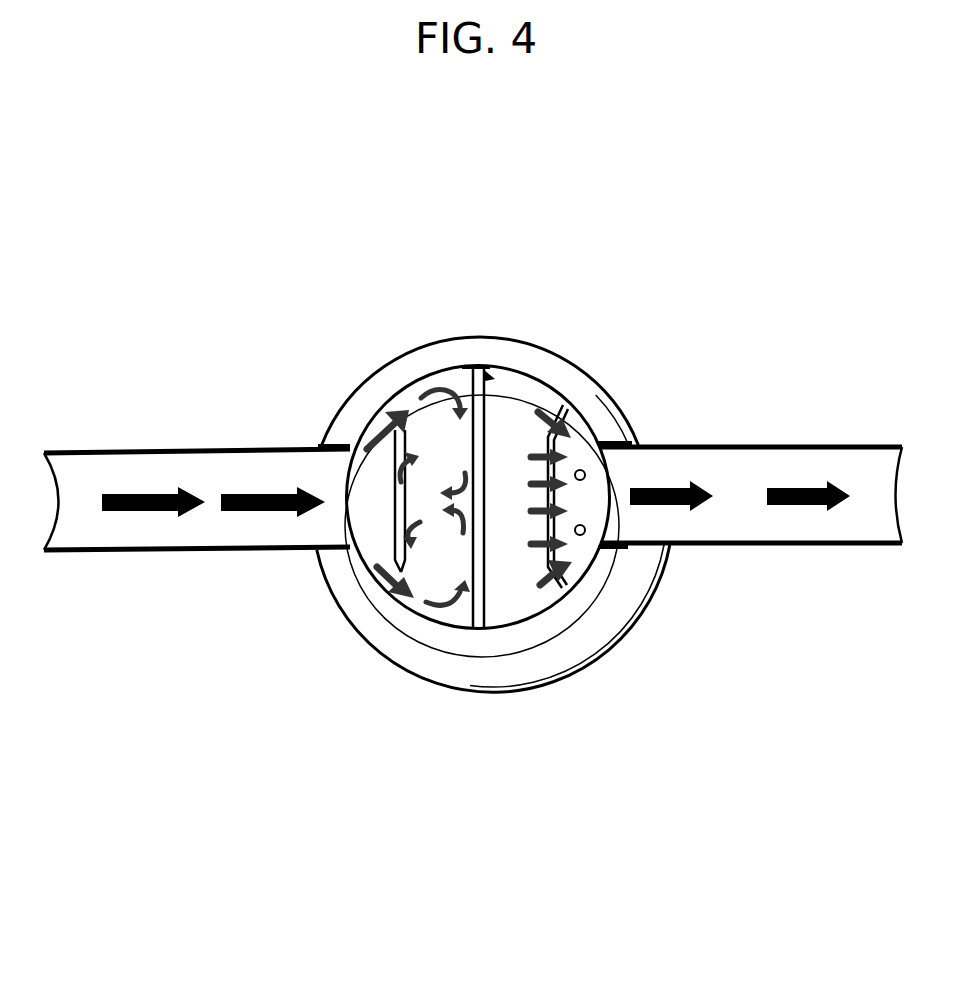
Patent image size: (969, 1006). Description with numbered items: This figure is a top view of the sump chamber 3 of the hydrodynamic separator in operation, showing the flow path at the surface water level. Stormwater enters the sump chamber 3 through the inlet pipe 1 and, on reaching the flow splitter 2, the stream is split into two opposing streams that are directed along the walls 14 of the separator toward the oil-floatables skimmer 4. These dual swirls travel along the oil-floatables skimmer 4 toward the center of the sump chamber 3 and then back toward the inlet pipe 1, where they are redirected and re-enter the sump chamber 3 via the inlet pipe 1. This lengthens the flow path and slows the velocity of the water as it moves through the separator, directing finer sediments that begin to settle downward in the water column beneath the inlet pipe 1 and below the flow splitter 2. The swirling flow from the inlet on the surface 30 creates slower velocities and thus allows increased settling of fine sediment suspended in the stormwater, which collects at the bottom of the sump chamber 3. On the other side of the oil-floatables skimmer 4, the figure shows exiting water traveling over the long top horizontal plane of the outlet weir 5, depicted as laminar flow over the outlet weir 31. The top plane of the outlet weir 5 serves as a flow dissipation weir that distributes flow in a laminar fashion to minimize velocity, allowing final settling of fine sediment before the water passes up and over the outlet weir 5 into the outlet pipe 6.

The inlet pipe 1 is at (228, 449).
The flow splitter 2 is at (396, 538).
The sump chamber 3 is at (522, 578).
The oil-floatables skimmer 4 is at (483, 417).
The outlet weir 5 is at (553, 531).
The outlet pipe 6 is at (697, 541).
The walls 14 is at (436, 356).
The swirling flow from the inlet on the surface 30 is at (445, 512).
The laminar flow over the outlet weir 31 is at (549, 563).